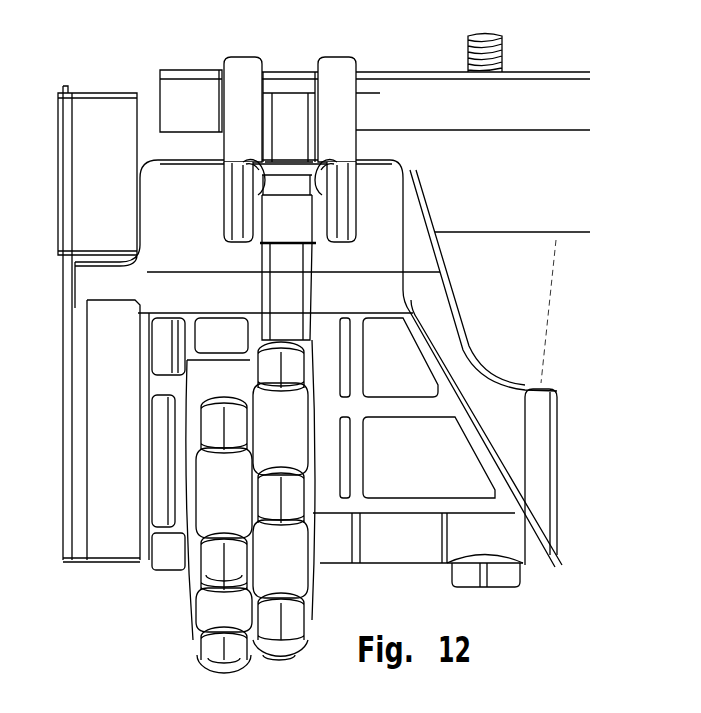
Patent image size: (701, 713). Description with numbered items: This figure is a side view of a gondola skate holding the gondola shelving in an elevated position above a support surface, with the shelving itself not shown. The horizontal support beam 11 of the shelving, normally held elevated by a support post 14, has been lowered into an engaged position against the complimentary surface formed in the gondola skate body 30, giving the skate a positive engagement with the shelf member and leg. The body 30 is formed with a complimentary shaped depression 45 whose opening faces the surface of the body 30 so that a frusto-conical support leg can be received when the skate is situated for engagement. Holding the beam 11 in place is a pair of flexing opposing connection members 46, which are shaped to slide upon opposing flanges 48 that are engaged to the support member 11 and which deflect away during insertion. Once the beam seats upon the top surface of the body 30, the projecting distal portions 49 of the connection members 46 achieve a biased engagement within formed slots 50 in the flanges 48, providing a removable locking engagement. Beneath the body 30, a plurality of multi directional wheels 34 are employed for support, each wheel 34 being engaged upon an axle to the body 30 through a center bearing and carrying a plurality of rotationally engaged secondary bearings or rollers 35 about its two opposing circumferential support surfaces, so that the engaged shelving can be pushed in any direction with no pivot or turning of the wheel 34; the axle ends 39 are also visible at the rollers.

The horizontal support beam 11 is at (482, 193).
The support post 14 is at (518, 332).
The gondola skate body 30 is at (108, 279).
The multi directional wheel 34 is at (218, 575).
The roller 35 is at (290, 575).
The roller axle 39 is at (210, 660).
The depression 45 is at (538, 386).
The connection member 46 is at (318, 212).
The flange 48 is at (272, 102).
The projecting distal portion 49 is at (256, 185).
The formed slot 50 is at (292, 188).